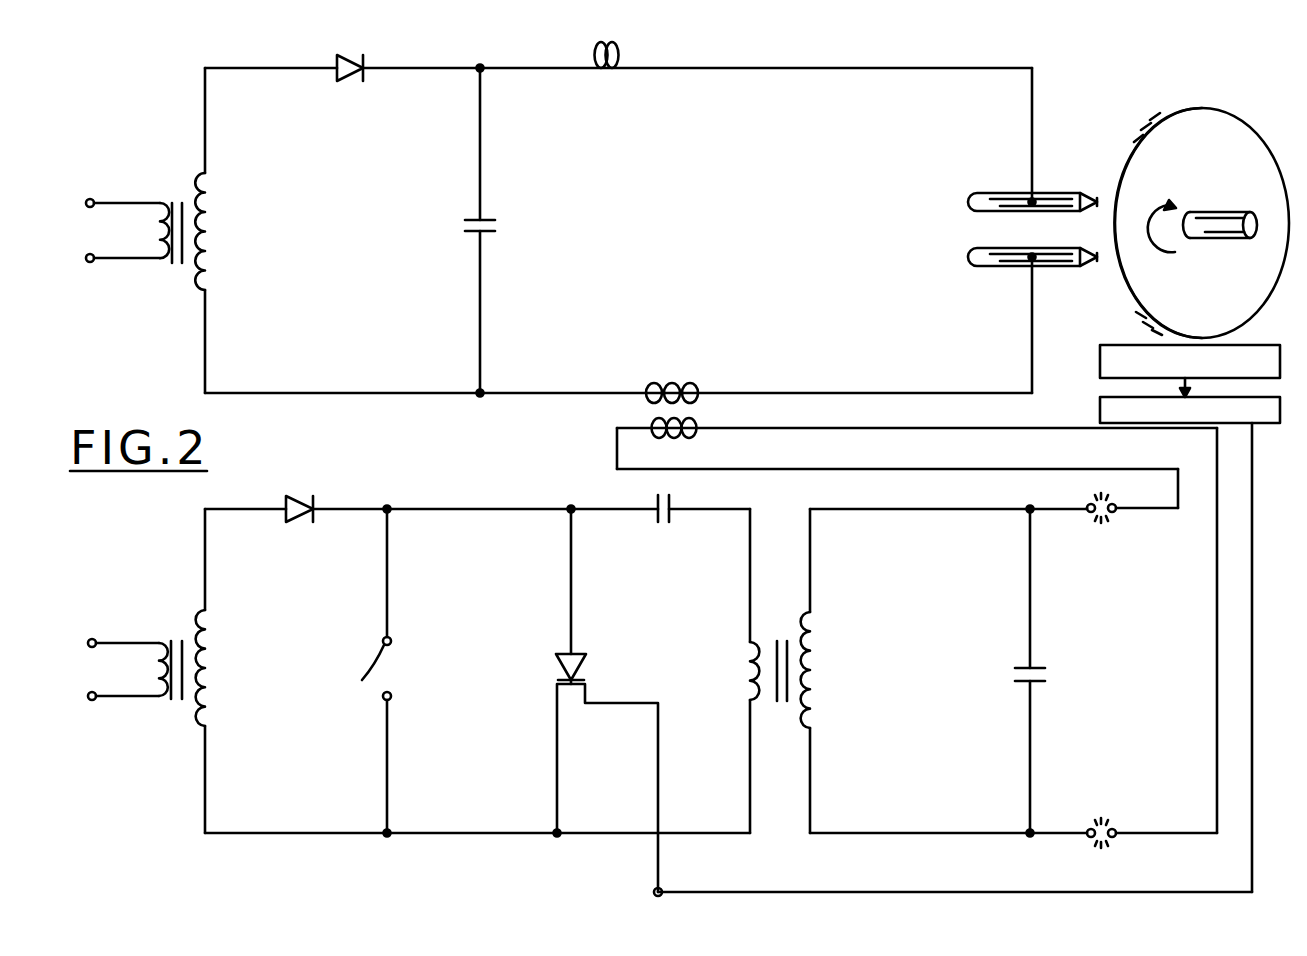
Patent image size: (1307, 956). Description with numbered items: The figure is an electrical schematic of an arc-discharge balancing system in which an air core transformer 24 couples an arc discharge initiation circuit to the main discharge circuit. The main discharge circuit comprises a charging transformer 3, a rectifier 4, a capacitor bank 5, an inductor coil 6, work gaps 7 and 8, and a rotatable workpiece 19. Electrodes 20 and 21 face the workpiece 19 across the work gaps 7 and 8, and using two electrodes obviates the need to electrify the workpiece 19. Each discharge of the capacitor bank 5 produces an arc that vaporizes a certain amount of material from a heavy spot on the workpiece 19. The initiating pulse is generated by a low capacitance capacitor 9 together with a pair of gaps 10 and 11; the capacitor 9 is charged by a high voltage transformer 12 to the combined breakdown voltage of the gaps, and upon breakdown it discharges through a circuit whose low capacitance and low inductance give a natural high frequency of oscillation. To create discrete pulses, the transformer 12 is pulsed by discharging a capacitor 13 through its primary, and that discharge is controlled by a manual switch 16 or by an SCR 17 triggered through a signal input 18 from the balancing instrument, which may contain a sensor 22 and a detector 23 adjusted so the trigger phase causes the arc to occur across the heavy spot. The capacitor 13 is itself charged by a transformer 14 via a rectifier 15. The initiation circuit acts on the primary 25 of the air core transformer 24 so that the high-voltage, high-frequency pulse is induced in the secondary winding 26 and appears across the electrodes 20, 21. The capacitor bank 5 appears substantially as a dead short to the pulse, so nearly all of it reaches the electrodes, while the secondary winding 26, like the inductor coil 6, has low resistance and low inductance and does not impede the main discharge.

The charging transformer 3 is at (172, 270).
The rectifier 4 is at (350, 56).
The capacitor bank 5 is at (490, 218).
The inductor coil 6 is at (620, 48).
The work gap 7 is at (1097, 192).
The work gap 8 is at (1097, 265).
The low capacitance capacitor 9 is at (1040, 666).
The gap 10 is at (1103, 520).
The gap 11 is at (1103, 822).
The high voltage transformer 12 is at (782, 636).
The capacitor 13 is at (660, 523).
The transformer 14 is at (172, 705).
The rectifier 15 is at (300, 500).
The manual switch 16 is at (372, 668).
The SCR 17 is at (557, 665).
The signal input 18 is at (652, 888).
The workpiece 19 is at (1198, 130).
The electrode 20 is at (1010, 192).
The electrode 21 is at (1000, 268).
The sensor 22 is at (1100, 362).
The detector 23 is at (1100, 407).
The air core transformer 24 is at (866, 399).
The primary 25 is at (690, 440).
The secondary winding 26 is at (705, 345).